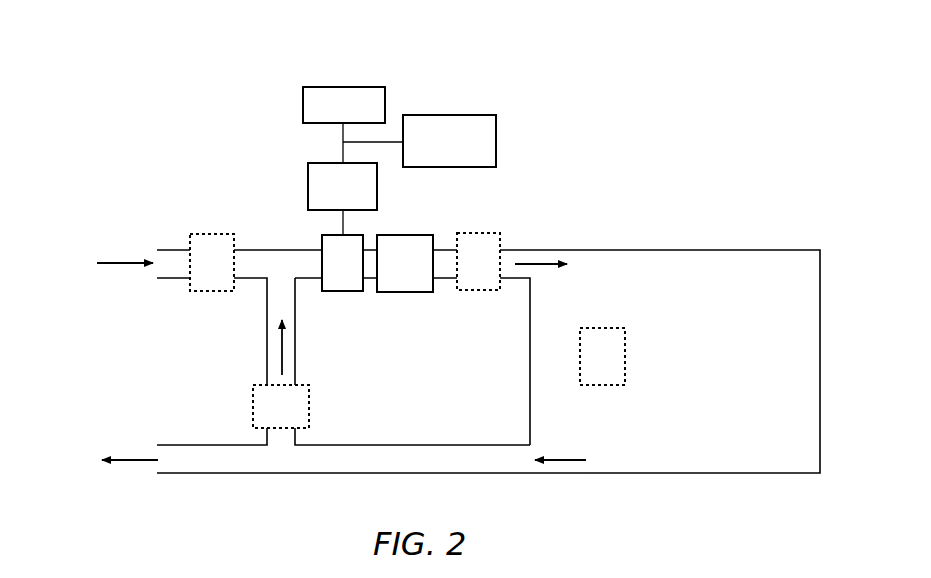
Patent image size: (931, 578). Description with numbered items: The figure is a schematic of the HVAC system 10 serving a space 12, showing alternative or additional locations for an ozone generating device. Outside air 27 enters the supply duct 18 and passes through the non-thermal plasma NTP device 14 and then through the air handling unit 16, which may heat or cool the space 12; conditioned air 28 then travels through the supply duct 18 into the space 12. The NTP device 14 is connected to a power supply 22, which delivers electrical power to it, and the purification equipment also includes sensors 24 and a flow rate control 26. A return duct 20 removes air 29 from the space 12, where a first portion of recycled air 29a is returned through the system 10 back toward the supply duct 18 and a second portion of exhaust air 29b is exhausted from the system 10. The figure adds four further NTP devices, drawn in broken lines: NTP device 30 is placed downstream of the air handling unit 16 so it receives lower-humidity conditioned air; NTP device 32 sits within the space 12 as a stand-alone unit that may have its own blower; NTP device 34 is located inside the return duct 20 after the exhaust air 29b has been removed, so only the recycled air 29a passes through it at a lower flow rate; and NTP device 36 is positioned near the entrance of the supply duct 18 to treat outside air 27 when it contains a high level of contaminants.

The HVAC system 10 is at (226, 183).
The space 12 is at (637, 262).
The NTP device 14 is at (358, 292).
The air handling unit 16 is at (410, 292).
The supply duct 18 is at (176, 279).
The return duct 20 is at (383, 443).
The power supply 22 is at (308, 190).
The sensors 24 is at (331, 87).
The flow rate control 26 is at (468, 115).
The outside air 27 is at (111, 263).
The conditioned air 28 is at (528, 263).
The return air 29 is at (563, 460).
The recycled air 29a is at (282, 358).
The exhaust air 29b is at (130, 462).
The NTP device 30 is at (470, 233).
The NTP device 32 is at (625, 360).
The NTP device 34 is at (258, 410).
The NTP device 36 is at (212, 248).